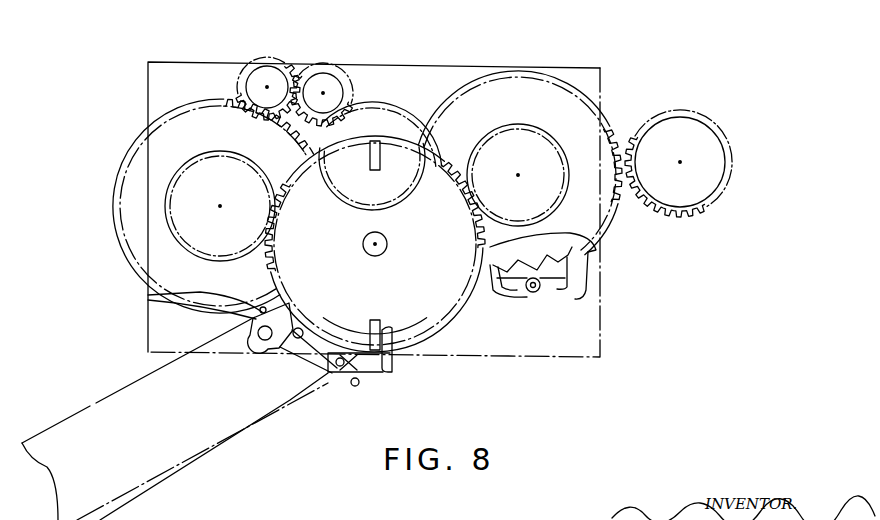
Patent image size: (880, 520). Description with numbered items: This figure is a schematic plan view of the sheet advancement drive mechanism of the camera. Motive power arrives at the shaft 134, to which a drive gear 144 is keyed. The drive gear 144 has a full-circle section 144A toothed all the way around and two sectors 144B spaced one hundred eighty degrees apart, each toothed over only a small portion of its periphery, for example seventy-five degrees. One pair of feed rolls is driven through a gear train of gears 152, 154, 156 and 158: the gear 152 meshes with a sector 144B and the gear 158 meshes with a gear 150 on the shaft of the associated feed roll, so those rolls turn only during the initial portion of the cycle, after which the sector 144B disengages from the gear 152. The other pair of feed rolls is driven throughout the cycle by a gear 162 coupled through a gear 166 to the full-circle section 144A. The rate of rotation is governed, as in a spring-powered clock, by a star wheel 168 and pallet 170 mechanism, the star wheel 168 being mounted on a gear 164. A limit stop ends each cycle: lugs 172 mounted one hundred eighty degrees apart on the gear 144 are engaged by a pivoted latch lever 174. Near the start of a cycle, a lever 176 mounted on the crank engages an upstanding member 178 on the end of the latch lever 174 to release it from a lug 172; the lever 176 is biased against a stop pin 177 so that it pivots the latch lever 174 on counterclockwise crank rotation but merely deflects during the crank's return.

The shaft 134 is at (385, 252).
The drive gear 144 is at (450, 340).
The 360° section 144A is at (458, 180).
The sectors 144B is at (270, 203).
The gear 150 is at (383, 102).
The gear 152 is at (165, 190).
The gear 154 is at (163, 115).
The gear 156 is at (239, 80).
The gear 158 is at (347, 72).
The gear 162 is at (645, 115).
The gear 164 is at (573, 82).
The gear 166 is at (497, 123).
The star wheel 168 is at (575, 252).
The pallet 170 is at (545, 292).
The lugs 172 is at (392, 330).
The latch lever 174 is at (330, 368).
The lever 176 is at (271, 350).
The stop pin 177 is at (148, 296).
The upstanding member 178 is at (322, 328).